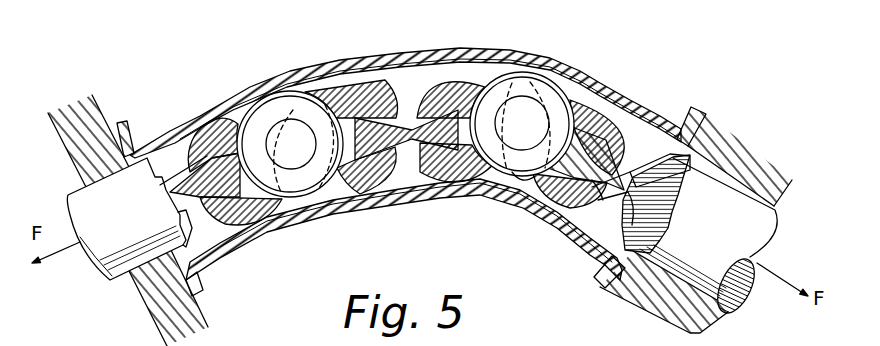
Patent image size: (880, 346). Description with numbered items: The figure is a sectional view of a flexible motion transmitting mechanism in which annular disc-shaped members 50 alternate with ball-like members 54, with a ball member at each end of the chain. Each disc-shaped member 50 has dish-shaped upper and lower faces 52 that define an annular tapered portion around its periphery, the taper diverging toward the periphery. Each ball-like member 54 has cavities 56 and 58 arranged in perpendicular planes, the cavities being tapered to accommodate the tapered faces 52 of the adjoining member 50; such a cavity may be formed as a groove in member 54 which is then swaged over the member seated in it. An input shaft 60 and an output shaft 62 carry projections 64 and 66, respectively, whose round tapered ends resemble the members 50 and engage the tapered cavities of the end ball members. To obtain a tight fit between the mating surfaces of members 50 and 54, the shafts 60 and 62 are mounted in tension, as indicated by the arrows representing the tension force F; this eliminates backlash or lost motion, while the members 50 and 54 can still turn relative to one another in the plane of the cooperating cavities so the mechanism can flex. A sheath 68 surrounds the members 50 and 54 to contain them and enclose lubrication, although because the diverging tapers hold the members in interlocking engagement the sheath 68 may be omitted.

The annular disc-shaped member 50 is at (283, 92).
The dish-shaped upper and lower faces 52 is at (418, 143).
The ball-like member 54 is at (210, 127).
The cavity 56 is at (520, 176).
The cavity 58 is at (578, 180).
The input shaft 60 is at (770, 210).
The output shaft 62 is at (113, 277).
The projection 64 is at (633, 178).
The projection 66 is at (210, 208).
The sheath 68 is at (413, 60).